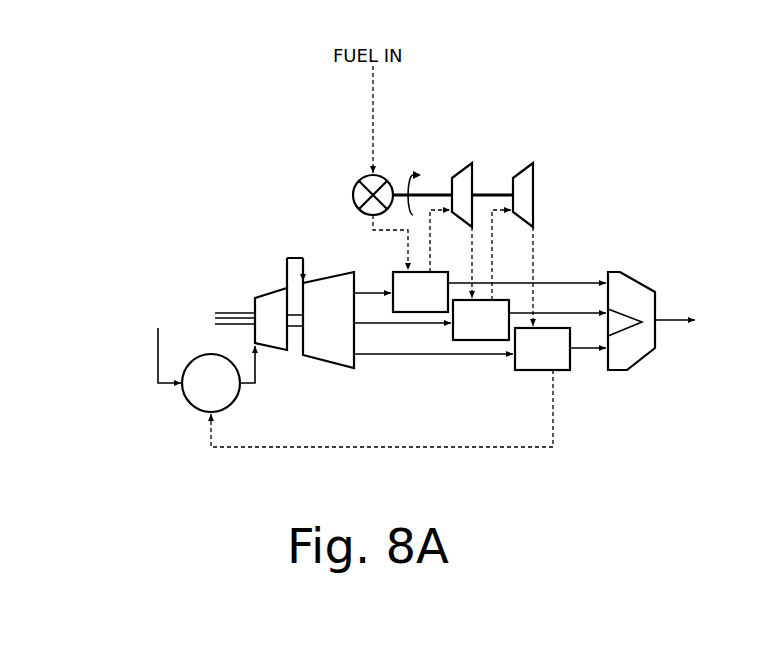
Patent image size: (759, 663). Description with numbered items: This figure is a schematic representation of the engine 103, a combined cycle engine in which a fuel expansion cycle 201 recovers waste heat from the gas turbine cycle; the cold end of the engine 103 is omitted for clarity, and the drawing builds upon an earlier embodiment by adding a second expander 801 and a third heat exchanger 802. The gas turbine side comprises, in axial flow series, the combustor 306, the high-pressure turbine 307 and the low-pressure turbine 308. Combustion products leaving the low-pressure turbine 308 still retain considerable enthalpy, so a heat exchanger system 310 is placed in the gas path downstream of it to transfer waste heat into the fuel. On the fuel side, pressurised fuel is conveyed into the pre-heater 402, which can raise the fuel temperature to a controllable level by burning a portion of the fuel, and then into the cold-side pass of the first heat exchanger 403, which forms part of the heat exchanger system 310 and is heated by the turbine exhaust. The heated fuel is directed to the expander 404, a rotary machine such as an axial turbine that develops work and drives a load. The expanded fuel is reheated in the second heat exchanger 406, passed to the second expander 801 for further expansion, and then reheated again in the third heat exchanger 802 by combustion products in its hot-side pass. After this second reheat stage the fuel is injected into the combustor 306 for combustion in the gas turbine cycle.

The engine 103 is at (175, 135).
The fuel expansion cycle 201 is at (445, 113).
The combustor 306 is at (200, 410).
The high-pressure turbine 307 is at (276, 298).
The low-pressure turbine 308 is at (340, 360).
The heat exchanger system 310 is at (641, 356).
The pre-heater 402 is at (358, 178).
The first heat exchanger 403 is at (400, 274).
The expander 404 is at (462, 183).
The second heat exchanger 406 is at (470, 334).
The second expander 801 is at (525, 183).
The third heat exchanger 802 is at (557, 367).